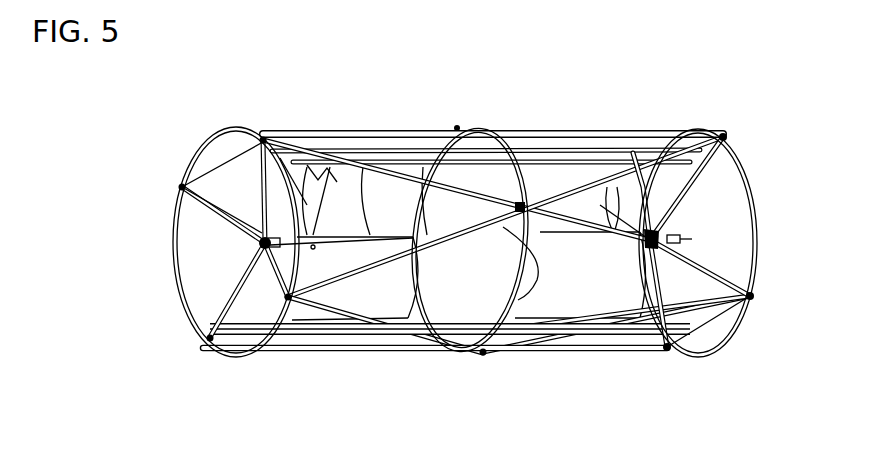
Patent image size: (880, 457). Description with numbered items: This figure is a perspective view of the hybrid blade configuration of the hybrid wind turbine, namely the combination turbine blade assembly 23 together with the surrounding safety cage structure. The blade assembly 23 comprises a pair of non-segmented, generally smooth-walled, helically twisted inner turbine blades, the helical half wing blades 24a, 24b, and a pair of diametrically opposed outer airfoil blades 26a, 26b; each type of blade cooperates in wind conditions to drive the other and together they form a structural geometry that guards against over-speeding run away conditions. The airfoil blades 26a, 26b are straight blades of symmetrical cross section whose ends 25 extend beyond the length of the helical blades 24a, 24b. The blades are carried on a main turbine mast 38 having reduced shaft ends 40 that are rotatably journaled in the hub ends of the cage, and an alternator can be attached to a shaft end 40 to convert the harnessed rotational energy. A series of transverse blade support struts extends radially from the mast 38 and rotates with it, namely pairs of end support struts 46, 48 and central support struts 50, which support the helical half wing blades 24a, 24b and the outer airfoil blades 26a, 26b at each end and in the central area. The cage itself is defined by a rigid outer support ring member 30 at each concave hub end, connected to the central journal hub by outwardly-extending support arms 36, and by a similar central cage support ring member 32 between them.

The combination turbine blade assembly 23 is at (672, 67).
The helical half wing blade 24a is at (370, 300).
The helical half wing blade 24b is at (598, 295).
The ends 25 is at (215, 130).
The outer airfoil blade 26a is at (592, 153).
The outer airfoil blade 26b is at (545, 323).
The outer support ring member 30 is at (195, 157).
The central cage support ring member 32 is at (476, 128).
The support arms 36 is at (182, 188).
The main turbine mast 38 is at (648, 350).
The shaft ends 40 is at (680, 240).
The end support strut 46 is at (660, 170).
The end support strut 48 is at (307, 168).
The central support struts 50 is at (478, 170).